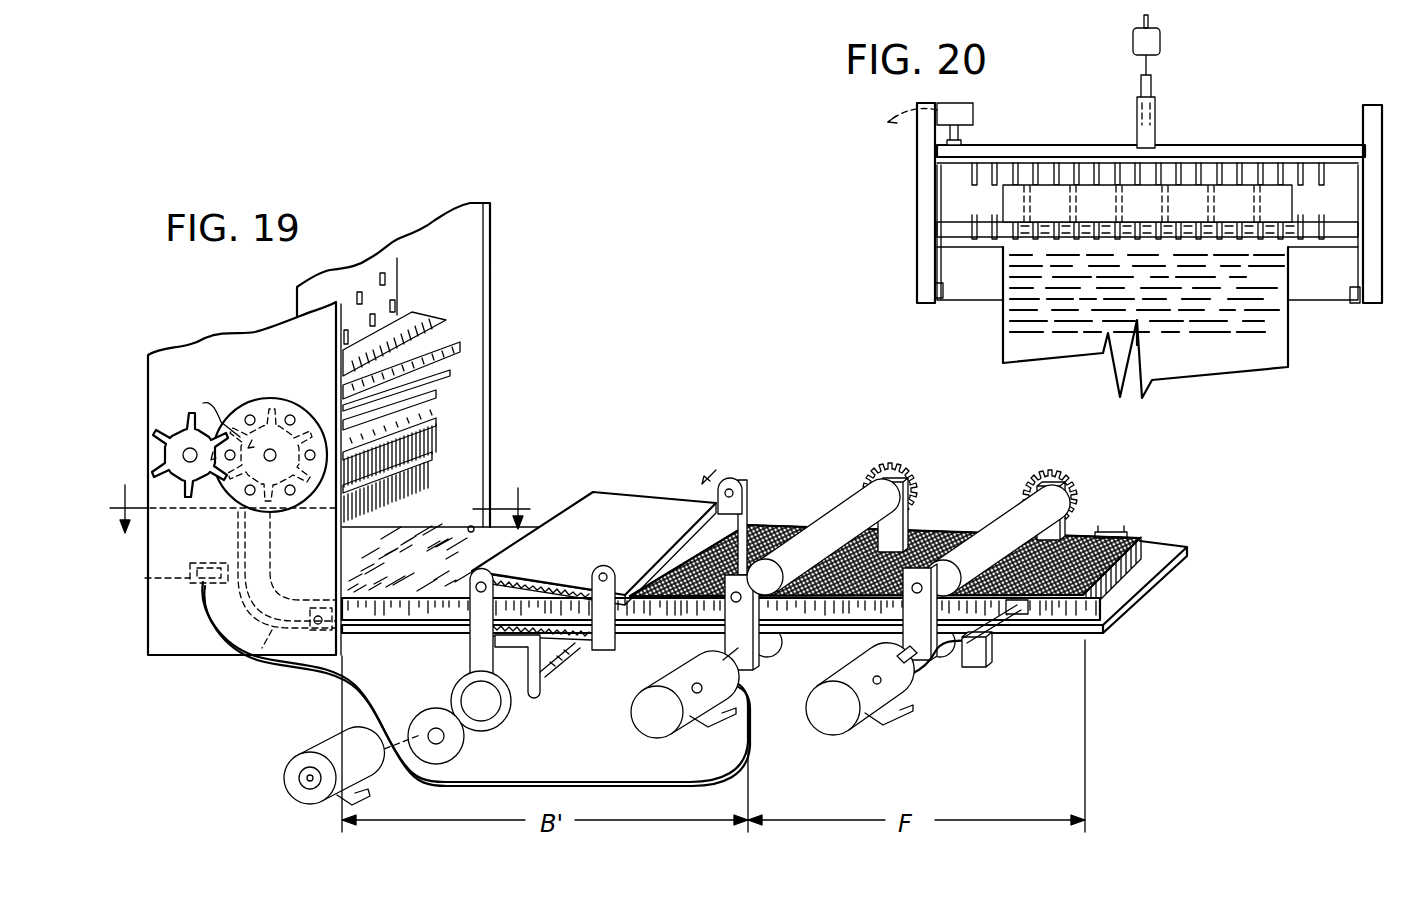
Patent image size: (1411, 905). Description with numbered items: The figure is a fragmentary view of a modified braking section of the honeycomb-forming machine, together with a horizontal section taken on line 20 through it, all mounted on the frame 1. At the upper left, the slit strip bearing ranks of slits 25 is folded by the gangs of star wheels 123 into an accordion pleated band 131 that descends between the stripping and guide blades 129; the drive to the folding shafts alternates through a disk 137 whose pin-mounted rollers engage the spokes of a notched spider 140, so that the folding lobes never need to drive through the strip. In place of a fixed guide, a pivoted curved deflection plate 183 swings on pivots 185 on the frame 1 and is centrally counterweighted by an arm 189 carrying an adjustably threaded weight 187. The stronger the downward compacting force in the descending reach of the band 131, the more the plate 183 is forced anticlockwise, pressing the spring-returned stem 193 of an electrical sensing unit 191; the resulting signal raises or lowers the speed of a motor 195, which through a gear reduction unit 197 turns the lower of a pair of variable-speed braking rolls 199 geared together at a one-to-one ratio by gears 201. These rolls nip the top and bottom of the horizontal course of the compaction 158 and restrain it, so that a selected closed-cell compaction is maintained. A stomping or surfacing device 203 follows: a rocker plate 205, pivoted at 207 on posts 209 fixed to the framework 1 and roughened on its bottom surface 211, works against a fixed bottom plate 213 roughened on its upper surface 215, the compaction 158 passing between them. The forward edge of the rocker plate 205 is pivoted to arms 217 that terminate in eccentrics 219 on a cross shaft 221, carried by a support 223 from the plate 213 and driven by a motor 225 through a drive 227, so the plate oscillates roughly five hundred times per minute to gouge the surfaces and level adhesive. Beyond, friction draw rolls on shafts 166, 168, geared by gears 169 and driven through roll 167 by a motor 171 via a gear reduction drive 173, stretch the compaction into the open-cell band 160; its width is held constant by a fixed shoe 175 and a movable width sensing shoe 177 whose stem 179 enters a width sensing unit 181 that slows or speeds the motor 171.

In FIG. 19, the frame 1 is at (1103, 630).
In FIG. 20, the frame 1 is at (1382, 216).
In FIG. 19, the section line 20— 20 is at (319, 499).
In FIG. 19, the slits 25 is at (398, 278).
In FIG. 19, the star wheels 123 is at (440, 372).
In FIG. 19, the stripping and guide blades 129 is at (425, 426).
In FIG. 20, the stripping and guide blades 129 is at (1052, 240).
In FIG. 19, the accordion pleated band 131 is at (372, 542).
In FIG. 20, the accordion pleated band 131 is at (1005, 205).
In FIG. 19, the disk 137 is at (300, 378).
In FIG. 19, the spider 140 is at (195, 430).
In FIG. 19, the compaction 158 is at (402, 615).
In FIG. 20, the compaction 158 is at (1257, 368).
In FIG. 19, the stretched band 160 is at (925, 543).
In FIG. 19, the shaft 166 is at (1034, 490).
In FIG. 19, the friction draw roll 167 is at (940, 675).
In FIG. 19, the shaft 168 is at (898, 650).
In FIG. 19, the gears 169 is at (1080, 530).
In FIG. 19, the motor 171 is at (833, 722).
In FIG. 19, the gear reduction drive 173 is at (880, 654).
In FIG. 19, the fixed shoe 175 is at (1122, 537).
In FIG. 19, the width sensing shoe 177 is at (1030, 610).
In FIG. 19, the stem 179 is at (1019, 630).
In FIG. 19, the width sensing unit 181 is at (980, 668).
In FIG. 19, the deflection plate 183 is at (250, 660).
In FIG. 20, the deflection plate 183 is at (970, 303).
In FIG. 19, the pivots 185 is at (470, 525).
In FIG. 20, the pivots 185 is at (1369, 303).
In FIG. 20, the weight 187 is at (1160, 42).
In FIG. 20, the arm 189 is at (1155, 118).
In FIG. 19, the sensing unit 191 is at (145, 578).
In FIG. 19, the stem 193 is at (228, 563).
In FIG. 20, the stem 193 is at (960, 130).
In FIG. 19, the motor 195 is at (652, 732).
In FIG. 19, the gear reduction unit 197 is at (693, 662).
In FIG. 19, the braking rolls 199 is at (806, 650).
In FIG. 19, the gears 201 is at (917, 503).
In FIG. 19, the stomping device 203 is at (720, 467).
In FIG. 19, the rocker plate 205 is at (594, 548).
In FIG. 19, the pivot 207 is at (596, 570).
In FIG. 19, the posts 209 is at (748, 500).
In FIG. 19, the roughened bottom surface 211 is at (551, 563).
In FIG. 19, the fixed bottom plate 213 is at (568, 637).
In FIG. 19, the roughened upper surface 215 is at (548, 670).
In FIG. 19, the arms 217 is at (608, 492).
In FIG. 19, the eccentric 219 is at (510, 717).
In FIG. 19, the cross shaft 221 is at (472, 728).
In FIG. 19, the support 223 is at (521, 667).
In FIG. 19, the motor 225 is at (327, 742).
In FIG. 19, the drive 227 is at (395, 775).